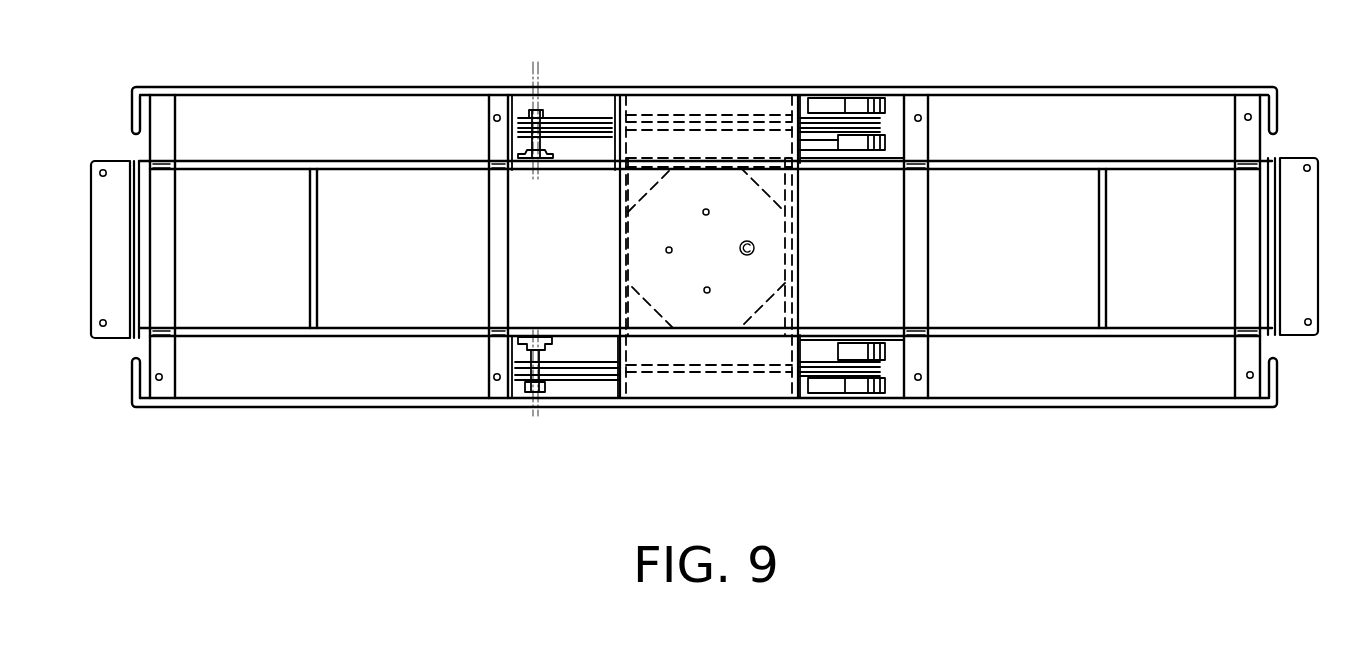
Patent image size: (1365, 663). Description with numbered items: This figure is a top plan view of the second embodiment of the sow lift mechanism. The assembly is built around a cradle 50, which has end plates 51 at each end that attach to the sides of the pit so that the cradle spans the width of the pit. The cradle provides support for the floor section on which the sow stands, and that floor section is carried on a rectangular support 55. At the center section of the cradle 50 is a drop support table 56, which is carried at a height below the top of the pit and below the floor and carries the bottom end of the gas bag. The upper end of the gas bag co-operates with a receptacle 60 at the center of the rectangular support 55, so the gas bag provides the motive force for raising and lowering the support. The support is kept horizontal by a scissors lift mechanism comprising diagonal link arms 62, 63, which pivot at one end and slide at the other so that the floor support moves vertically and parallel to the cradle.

The cradle 50 is at (335, 157).
The end plates 51 is at (110, 297).
The rectangular support 55 is at (1066, 84).
The drop support table 56 is at (690, 173).
The receptacle 60 is at (652, 238).
The diagonal link arm 62 is at (587, 350).
The diagonal link arm 63 is at (573, 382).